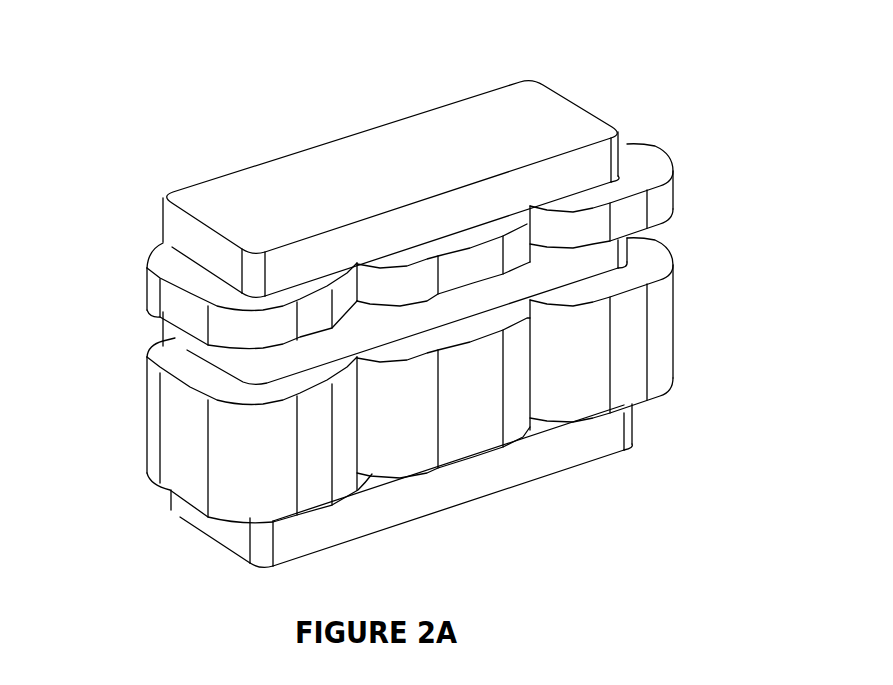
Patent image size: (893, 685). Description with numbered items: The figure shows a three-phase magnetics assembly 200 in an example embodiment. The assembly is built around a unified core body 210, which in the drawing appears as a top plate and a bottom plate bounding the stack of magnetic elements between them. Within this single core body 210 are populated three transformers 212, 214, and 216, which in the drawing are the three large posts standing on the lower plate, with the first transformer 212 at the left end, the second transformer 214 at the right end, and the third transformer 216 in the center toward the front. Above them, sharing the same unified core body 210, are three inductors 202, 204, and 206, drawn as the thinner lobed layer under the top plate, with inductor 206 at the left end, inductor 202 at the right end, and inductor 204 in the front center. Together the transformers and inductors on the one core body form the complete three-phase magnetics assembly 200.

The three-phase magnetics assembly 200 is at (272, 100).
The inductor 202 is at (688, 192).
The inductor 204 is at (438, 235).
The inductor 206 is at (128, 281).
The unified core body 210 is at (415, 171).
The transformer 212 is at (128, 426).
The transformer 214 is at (693, 313).
The transformer 216 is at (473, 482).